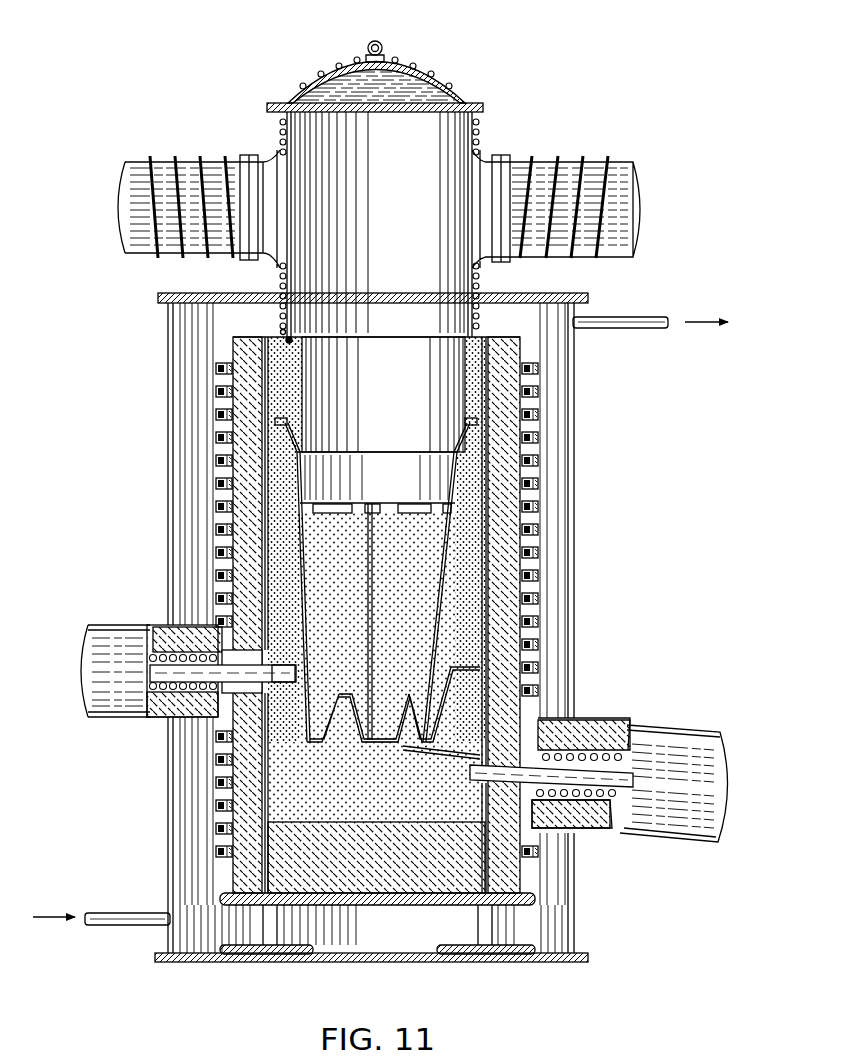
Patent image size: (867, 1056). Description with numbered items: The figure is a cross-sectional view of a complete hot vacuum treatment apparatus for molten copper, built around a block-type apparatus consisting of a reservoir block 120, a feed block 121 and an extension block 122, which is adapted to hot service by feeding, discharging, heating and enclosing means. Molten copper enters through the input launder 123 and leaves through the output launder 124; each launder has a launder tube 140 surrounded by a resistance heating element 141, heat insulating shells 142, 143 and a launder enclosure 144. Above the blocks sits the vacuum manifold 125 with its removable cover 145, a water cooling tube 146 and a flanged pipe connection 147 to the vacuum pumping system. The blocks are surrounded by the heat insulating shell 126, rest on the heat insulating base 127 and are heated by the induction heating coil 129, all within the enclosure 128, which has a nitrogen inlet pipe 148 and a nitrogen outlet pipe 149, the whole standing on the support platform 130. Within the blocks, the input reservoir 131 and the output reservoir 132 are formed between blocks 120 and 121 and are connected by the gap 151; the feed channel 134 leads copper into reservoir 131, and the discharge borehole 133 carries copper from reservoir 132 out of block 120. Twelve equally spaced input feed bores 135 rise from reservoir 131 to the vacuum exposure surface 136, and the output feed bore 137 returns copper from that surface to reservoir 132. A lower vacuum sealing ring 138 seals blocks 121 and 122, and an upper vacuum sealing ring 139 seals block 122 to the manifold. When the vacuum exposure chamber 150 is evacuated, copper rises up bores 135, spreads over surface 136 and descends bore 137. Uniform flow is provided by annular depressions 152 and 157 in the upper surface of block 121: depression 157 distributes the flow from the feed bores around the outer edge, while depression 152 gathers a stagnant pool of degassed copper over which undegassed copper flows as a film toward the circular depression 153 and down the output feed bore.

The reservoir block 120 is at (278, 803).
The feed block 121 is at (278, 548).
The extension block 122 is at (279, 350).
The input launder 123 is at (113, 624).
The output launder 124 is at (690, 724).
The vacuum manifold 125 is at (450, 143).
The heat insulating shell 126 is at (512, 358).
The heat insulating base 127 is at (463, 875).
The enclosure 128 is at (576, 517).
The induction heating coil 129 is at (539, 481).
The support platform 130 is at (532, 906).
The input reservoir 131 is at (308, 730).
The output reservoir 132 is at (355, 741).
The discharge borehole 133 is at (428, 762).
The feed channel 134 is at (283, 677).
The input feed bore 135 is at (304, 576).
The vacuum exposure surface 136 is at (345, 500).
The output feed bore 137 is at (374, 581).
The lower vacuum sealing ring 138 is at (288, 422).
The upper vacuum sealing ring 139 is at (292, 339).
The launder tube 140 is at (225, 720).
The resistance heating element 141 is at (170, 700).
The heat insulating shell 142 is at (158, 640).
The heat insulating shell 143 is at (172, 708).
The launder enclosure 144 is at (186, 630).
The removable cover 145 is at (350, 70).
The water cooling tube 146 is at (433, 74).
The flanged pipe connection 147 is at (563, 158).
The nitrogen inlet pipe 148 is at (115, 926).
The nitrogen outlet pipe 149 is at (635, 316).
The vacuum exposure chamber 150 is at (392, 389).
The gap 151 is at (347, 698).
The annular depression 152 is at (413, 503).
The circular depression 153 is at (376, 498).
The annular depression 157 is at (452, 499).